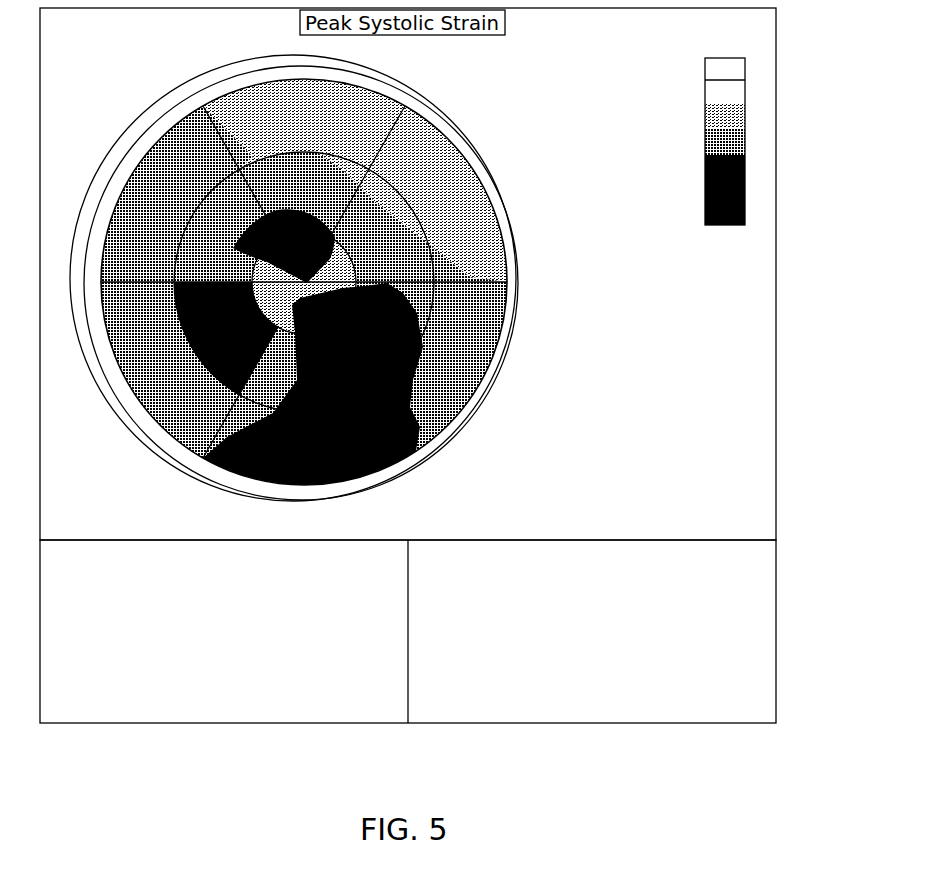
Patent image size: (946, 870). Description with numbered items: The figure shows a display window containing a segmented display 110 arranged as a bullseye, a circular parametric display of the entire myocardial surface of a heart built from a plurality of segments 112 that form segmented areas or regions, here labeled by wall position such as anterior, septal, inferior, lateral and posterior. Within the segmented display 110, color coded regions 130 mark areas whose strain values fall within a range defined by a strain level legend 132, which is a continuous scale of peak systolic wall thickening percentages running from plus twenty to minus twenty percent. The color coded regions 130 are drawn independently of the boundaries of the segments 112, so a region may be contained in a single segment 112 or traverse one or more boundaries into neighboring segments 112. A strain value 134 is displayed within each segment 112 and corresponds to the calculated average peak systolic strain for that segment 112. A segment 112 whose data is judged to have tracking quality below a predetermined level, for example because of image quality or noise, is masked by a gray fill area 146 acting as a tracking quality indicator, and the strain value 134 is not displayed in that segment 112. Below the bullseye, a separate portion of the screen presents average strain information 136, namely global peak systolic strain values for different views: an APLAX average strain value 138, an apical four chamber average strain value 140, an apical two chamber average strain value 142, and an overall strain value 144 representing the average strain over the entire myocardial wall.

The segmented display 110 is at (324, 291).
The segments 112 is at (500, 316).
The color coded regions 130 is at (154, 268).
The strain level legend 132 is at (680, 188).
The strain value 134 is at (205, 222).
The average strain information 136 is at (408, 668).
The APLAX average strain value 138 is at (303, 579).
The apical four chamber average strain value 140 is at (315, 606).
The apical two chamber average strain value 142 is at (315, 632).
The overall strain value 144 is at (320, 658).
The gray fill area 146 is at (183, 297).